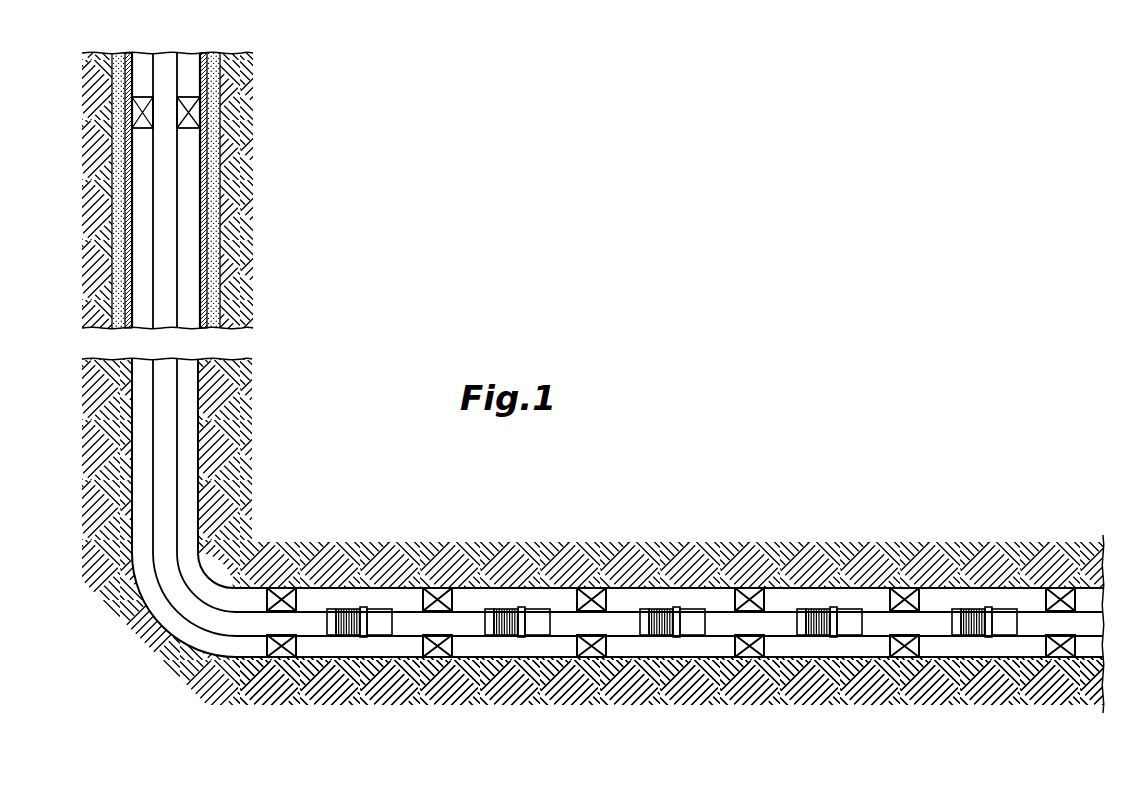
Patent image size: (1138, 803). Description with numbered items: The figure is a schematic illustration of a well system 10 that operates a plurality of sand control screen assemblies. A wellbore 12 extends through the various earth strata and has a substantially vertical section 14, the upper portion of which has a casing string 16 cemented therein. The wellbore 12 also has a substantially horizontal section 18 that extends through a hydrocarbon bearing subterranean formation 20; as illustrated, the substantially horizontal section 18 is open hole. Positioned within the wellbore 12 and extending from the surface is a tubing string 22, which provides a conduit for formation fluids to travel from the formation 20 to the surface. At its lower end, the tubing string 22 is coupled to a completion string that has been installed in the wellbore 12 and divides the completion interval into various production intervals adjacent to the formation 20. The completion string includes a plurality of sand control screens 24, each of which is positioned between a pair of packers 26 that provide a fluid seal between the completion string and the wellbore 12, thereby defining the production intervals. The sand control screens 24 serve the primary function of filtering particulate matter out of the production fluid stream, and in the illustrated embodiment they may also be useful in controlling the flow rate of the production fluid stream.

The well system 10 is at (398, 259).
The wellbore 12 is at (203, 415).
The substantially vertical section 14 is at (203, 367).
The casing string 16 is at (202, 223).
The substantially horizontal section 18 is at (520, 588).
The hydrocarbon bearing subterranean formation 20 is at (620, 571).
The tubing string 22 is at (177, 465).
The sand control screens 24 is at (362, 610).
The packers 26 is at (436, 590).